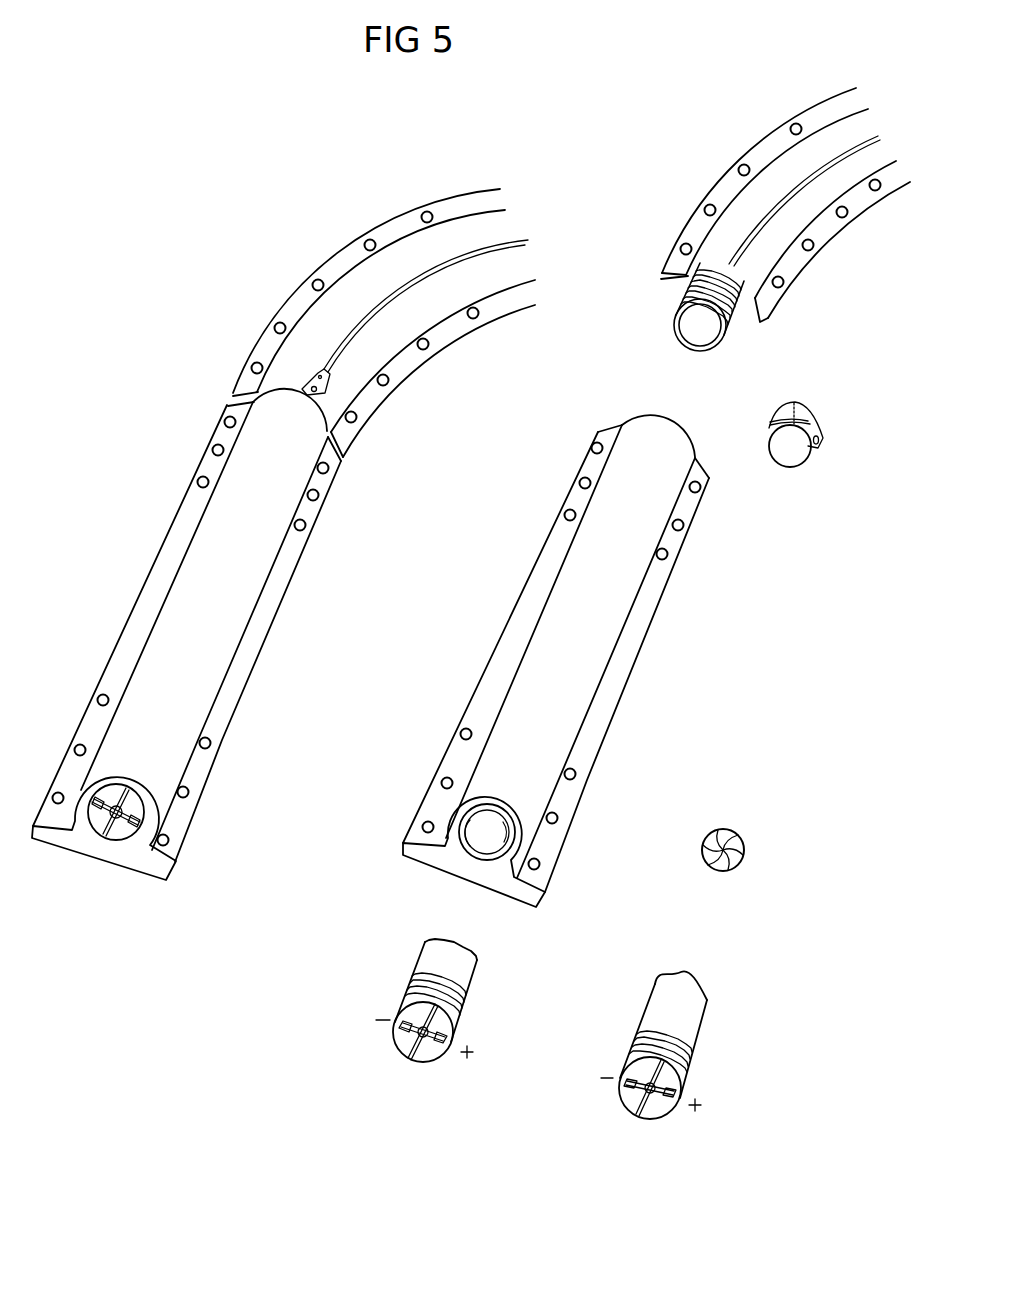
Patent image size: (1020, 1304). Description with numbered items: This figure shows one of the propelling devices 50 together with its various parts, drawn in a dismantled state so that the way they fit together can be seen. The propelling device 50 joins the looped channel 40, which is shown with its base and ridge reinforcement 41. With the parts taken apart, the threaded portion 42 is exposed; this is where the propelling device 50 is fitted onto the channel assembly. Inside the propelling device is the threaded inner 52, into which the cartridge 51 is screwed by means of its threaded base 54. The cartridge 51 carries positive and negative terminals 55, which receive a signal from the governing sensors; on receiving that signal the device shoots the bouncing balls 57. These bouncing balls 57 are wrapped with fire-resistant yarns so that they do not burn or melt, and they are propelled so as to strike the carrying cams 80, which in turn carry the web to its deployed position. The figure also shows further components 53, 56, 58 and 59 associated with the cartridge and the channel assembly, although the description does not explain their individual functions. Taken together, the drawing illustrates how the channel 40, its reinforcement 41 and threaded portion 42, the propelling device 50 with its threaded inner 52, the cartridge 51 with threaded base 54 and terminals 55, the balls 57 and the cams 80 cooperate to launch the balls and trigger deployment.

The looped channel 40 is at (285, 290).
The base and ridge reinforcement 41 is at (213, 377).
The threaded portion 42 is at (672, 303).
The propelling device 50 is at (389, 681).
The cartridge 51 is at (446, 1026).
The threaded inner 52 is at (468, 855).
The threads 53 is at (410, 957).
The threaded base 54 is at (467, 1022).
The positive and negative terminals 55 is at (428, 1045).
The end face cross 56 is at (643, 1122).
The bouncing balls 57 is at (757, 862).
The end plate 58 is at (163, 887).
The second cartridge 59 is at (718, 1069).
The carrying cams 80 is at (784, 480).